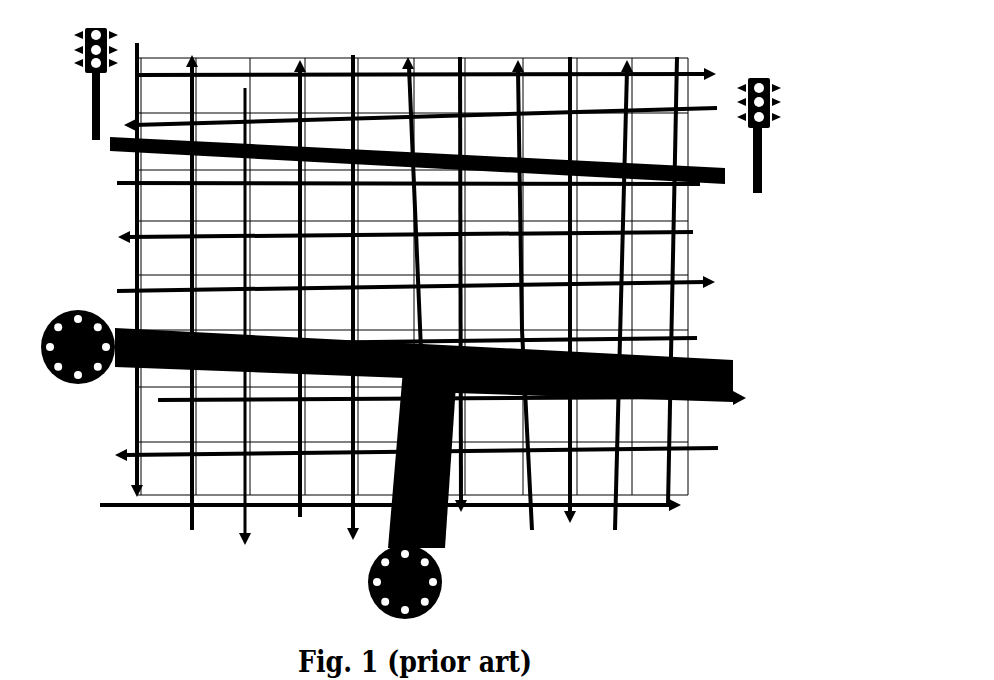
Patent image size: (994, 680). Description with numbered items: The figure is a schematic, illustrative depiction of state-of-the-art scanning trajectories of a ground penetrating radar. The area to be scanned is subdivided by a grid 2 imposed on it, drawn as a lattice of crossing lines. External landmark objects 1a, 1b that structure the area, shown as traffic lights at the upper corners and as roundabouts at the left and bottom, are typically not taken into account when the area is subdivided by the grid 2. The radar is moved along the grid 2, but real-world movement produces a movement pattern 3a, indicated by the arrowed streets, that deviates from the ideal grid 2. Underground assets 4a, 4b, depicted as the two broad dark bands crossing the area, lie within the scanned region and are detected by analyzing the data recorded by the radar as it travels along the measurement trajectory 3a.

The external landmark object 1a is at (451, 96).
The external landmark object 1b is at (289, 434).
The grid 2 is at (412, 260).
The movement pattern 3a is at (436, 279).
The underground asset 4a is at (464, 178).
The underground asset 4b is at (454, 438).